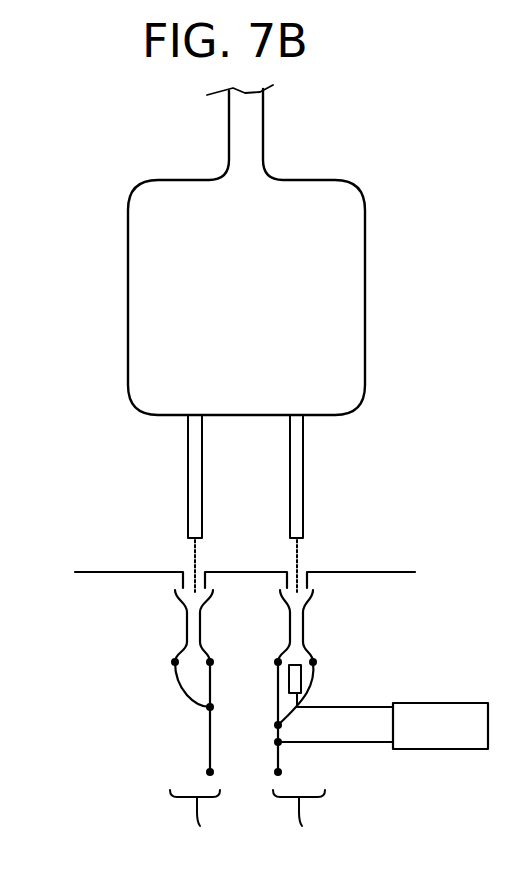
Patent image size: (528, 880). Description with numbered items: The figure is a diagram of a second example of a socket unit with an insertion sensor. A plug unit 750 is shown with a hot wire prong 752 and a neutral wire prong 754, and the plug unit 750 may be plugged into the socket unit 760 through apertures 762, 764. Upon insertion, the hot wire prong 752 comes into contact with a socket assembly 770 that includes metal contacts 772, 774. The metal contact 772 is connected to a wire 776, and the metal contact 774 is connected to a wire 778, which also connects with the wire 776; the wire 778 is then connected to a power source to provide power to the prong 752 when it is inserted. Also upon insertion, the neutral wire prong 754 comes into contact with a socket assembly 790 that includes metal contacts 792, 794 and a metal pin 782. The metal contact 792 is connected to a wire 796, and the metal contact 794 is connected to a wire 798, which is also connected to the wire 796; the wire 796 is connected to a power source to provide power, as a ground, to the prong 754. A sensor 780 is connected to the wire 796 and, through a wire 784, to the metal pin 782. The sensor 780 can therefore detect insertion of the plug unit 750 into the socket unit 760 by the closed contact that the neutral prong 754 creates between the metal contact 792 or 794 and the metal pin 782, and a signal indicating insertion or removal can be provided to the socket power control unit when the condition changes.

The plug unit 750 is at (278, 250).
The hot wire prong 752 is at (188, 483).
The neutral wire prong 754 is at (303, 482).
The socket unit 760 is at (378, 572).
The aperture 762 is at (168, 555).
The aperture 764 is at (315, 556).
The socket assembly 770 is at (197, 821).
The metal contact 772 is at (178, 598).
The metal contact 774 is at (207, 599).
The wire 776 is at (187, 700).
The wire 778 is at (210, 748).
The sensor 780 is at (457, 703).
The metal pin 782 is at (302, 680).
The wire 784 is at (348, 705).
The socket assembly 790 is at (300, 821).
The metal contact 792 is at (290, 625).
The metal contact 794 is at (303, 623).
The wire 796 is at (283, 755).
The wire 798 is at (300, 713).